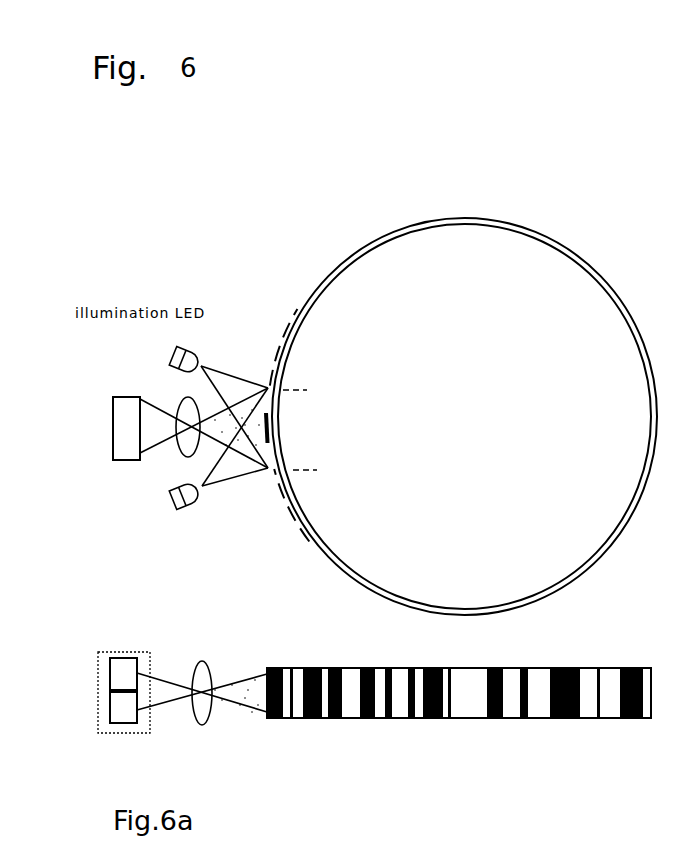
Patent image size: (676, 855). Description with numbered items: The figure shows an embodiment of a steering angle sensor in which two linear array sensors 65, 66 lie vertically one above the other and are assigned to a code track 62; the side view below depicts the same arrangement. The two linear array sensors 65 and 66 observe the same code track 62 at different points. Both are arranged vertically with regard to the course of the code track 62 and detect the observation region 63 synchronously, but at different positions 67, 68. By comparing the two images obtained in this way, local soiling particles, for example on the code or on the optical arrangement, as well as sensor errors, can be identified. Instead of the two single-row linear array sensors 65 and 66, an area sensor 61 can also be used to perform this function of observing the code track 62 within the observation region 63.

In FIG. 6, the area sensor 61 is at (109, 645).
In FIG. 6A, the area sensor 61 is at (109, 648).
In FIG. 6, the code track 62 is at (280, 522).
In FIG. 6A, the code track 62 is at (313, 667).
In FIG. 6, the observation region 63 is at (291, 430).
In FIG. 6A, the linear array sensor 65 is at (117, 673).
In FIG. 6A, the linear array sensor 66 is at (117, 710).
In FIG. 6A, the position 67 is at (263, 677).
In FIG. 6A, the position 68 is at (263, 712).